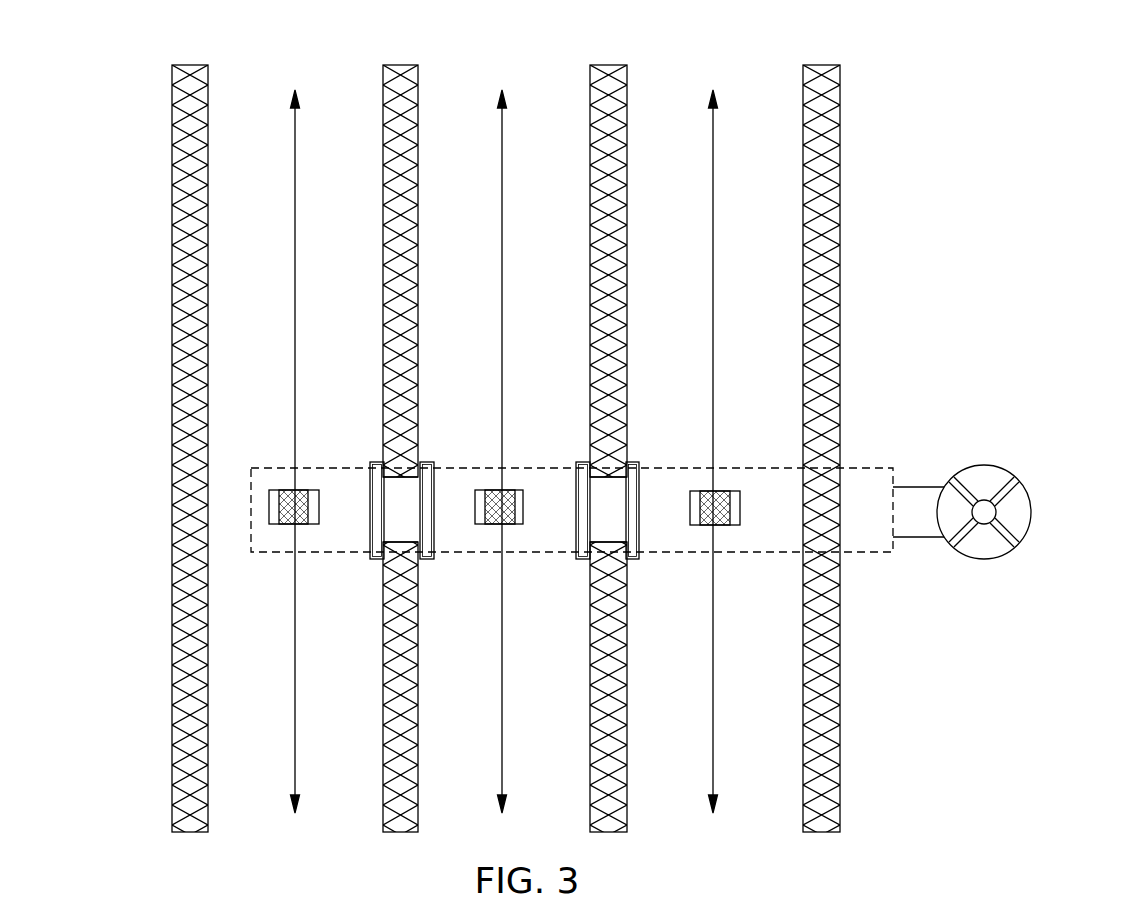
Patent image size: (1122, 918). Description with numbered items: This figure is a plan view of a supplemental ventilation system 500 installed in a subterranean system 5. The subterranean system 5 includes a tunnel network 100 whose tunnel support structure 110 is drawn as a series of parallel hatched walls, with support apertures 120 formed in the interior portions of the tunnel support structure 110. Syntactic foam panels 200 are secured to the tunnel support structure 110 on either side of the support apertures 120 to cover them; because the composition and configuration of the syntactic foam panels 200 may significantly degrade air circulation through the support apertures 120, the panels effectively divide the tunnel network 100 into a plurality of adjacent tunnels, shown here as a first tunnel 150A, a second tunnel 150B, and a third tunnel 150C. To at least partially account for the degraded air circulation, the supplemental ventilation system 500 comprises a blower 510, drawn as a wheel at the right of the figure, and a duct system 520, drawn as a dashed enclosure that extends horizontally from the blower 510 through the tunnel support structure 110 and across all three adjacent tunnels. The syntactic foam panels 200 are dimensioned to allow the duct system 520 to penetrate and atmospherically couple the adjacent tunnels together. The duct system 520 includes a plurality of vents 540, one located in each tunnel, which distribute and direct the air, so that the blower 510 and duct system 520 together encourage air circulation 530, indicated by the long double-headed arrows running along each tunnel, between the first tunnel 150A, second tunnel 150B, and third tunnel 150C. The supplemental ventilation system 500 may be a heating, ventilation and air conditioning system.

The subterranean system 5 is at (977, 168).
The tunnel network 100 is at (171, 482).
The tunnel support structure 110 is at (420, 382).
The support apertures 120 is at (412, 548).
The first tunnel 150A is at (245, 85).
The second tunnel 150B is at (457, 85).
The third tunnel 150C is at (665, 80).
The syntactic foam panels 200 is at (427, 495).
The supplemental ventilation system 500 is at (971, 459).
The blower 510 is at (1021, 481).
The duct system 520 is at (318, 466).
The air circulation 530 is at (297, 298).
The vents 540 is at (272, 545).